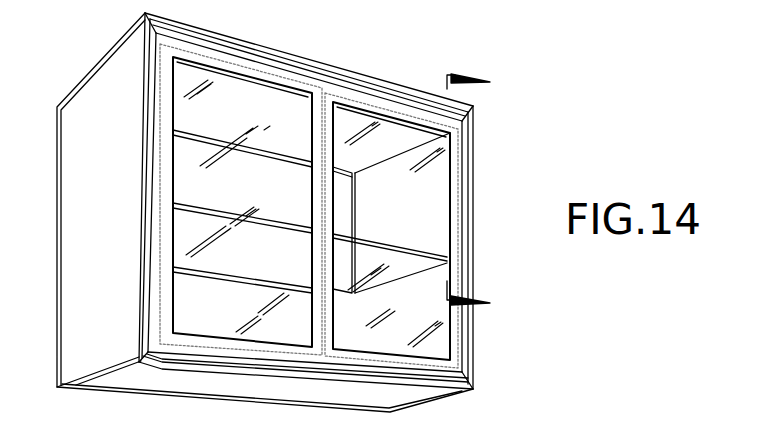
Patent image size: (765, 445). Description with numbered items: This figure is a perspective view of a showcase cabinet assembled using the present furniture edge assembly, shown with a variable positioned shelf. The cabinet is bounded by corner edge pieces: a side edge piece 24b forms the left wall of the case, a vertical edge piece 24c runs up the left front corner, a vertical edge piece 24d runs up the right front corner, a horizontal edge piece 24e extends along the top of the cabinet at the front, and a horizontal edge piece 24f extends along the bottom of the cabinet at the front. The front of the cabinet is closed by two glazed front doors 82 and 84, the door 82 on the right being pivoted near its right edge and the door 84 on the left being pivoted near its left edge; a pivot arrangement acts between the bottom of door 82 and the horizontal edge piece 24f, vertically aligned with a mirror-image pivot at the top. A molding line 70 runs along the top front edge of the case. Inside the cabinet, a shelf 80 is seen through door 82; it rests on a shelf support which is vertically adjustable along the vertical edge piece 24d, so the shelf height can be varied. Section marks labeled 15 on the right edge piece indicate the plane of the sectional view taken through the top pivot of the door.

The edge piece 24b is at (57, 175).
The edge piece 24c is at (141, 168).
The vertical edge piece 24d is at (473, 172).
The edge piece 24e is at (362, 88).
The horizontal edge piece 24f is at (392, 372).
The top molding 70 is at (330, 65).
The shelf 80 is at (392, 242).
The front door 82 is at (390, 108).
The front door 84 is at (230, 66).
The section line 15- 15 is at (452, 189).